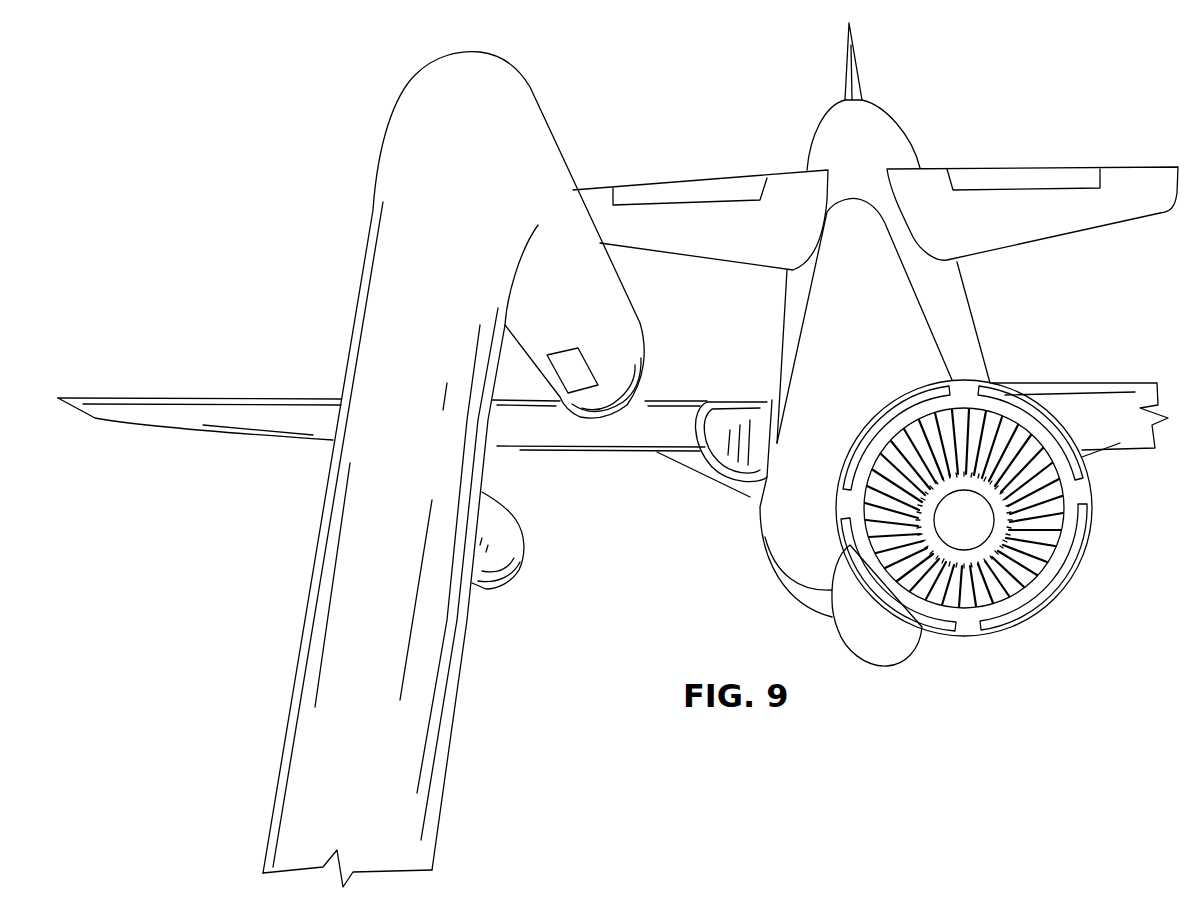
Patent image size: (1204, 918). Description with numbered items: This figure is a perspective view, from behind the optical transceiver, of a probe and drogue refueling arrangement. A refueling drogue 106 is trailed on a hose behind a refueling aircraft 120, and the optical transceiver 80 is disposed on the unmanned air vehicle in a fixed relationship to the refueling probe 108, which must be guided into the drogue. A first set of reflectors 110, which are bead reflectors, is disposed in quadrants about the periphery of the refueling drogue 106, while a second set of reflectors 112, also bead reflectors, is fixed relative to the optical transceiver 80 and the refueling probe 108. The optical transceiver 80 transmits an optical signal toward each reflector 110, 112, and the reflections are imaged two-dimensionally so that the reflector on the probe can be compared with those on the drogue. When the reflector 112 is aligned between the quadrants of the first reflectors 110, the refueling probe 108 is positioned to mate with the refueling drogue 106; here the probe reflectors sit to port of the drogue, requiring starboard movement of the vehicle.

The refueling drogue 106 is at (1036, 634).
The refueling probe 108 is at (472, 205).
The first set of reflectors 110 is at (1082, 473).
The second set of reflectors 112 is at (575, 382).
The refueling aircraft 120 is at (890, 341).
The optical transceiver 80 is at (487, 587).